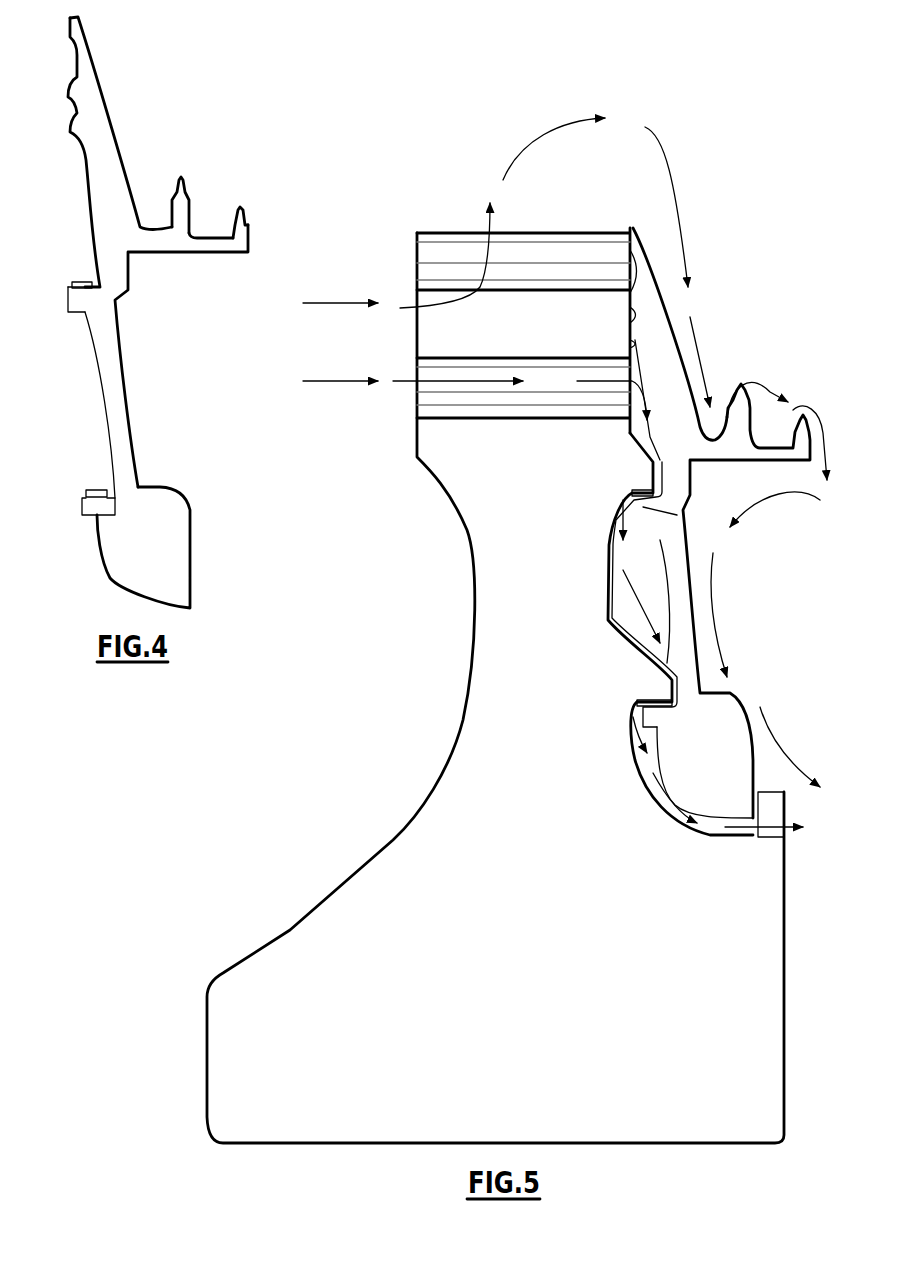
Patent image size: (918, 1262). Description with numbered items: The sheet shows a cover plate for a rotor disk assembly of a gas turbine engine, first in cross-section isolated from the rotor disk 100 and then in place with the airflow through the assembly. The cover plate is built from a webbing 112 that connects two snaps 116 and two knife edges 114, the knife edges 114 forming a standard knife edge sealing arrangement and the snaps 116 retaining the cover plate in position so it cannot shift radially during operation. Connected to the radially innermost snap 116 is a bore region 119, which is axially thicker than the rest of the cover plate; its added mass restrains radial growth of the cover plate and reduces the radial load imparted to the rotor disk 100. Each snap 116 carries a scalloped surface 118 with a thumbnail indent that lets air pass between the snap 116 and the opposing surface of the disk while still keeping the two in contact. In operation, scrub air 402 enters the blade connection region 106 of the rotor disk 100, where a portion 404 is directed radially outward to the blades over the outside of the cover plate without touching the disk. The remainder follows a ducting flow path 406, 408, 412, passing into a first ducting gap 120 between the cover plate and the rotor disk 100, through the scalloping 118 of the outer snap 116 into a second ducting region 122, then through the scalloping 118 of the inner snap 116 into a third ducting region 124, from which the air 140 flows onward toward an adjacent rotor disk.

In FIG. 5, the rotor disk 100 is at (541, 989).
In FIG. 5, the blade connection region 106 is at (570, 253).
In FIG. 4, the webbing 112 is at (105, 168).
In FIG. 4, the knife edges 114 is at (185, 188).
In FIG. 4, the snaps 116 is at (83, 302).
In FIG. 5, the snaps 116 is at (677, 515).
In FIG. 4, the scalloped surface 118 is at (84, 283).
In FIG. 5, the scalloped surface 118 is at (643, 492).
In FIG. 4, the bore region 119 is at (160, 546).
In FIG. 5, the first ducting gap 120 is at (642, 367).
In FIG. 5, the second ducting region 122 is at (647, 578).
In FIG. 5, the third ducting region 124 is at (677, 801).
In FIG. 5, the cooling flow path 140 is at (643, 610).
In FIG. 5, the scrub air 402 is at (334, 306).
In FIG. 5, the portion of the scrub air 404 is at (490, 253).
In FIG. 5, the ducting flow path 406 is at (493, 380).
In FIG. 5, the ducting flow path 408 is at (652, 398).
In FIG. 5, the ducting flow path 412 is at (656, 777).